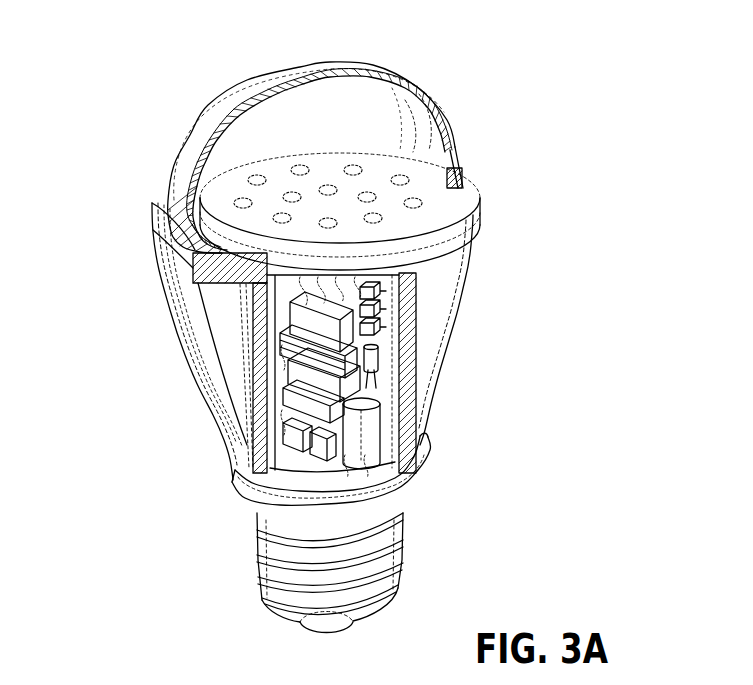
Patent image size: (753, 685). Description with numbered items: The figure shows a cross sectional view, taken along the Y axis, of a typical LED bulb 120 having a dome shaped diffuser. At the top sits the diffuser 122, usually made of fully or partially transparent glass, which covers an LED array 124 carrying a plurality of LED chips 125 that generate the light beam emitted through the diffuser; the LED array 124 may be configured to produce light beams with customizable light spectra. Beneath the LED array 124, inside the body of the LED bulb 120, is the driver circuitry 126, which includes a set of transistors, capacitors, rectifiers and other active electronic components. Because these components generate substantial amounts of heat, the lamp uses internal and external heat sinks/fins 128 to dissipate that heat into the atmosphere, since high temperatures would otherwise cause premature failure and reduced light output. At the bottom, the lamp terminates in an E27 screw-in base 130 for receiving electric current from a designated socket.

The LED bulb 120 is at (548, 43).
The diffuser 122 is at (207, 113).
The LED array 124 is at (403, 222).
The LED chips 125 is at (358, 168).
The driver circuitry 126 is at (424, 386).
The internal and external heat sinks/fins 128 is at (160, 348).
The E27 screw-in base 130 is at (407, 548).